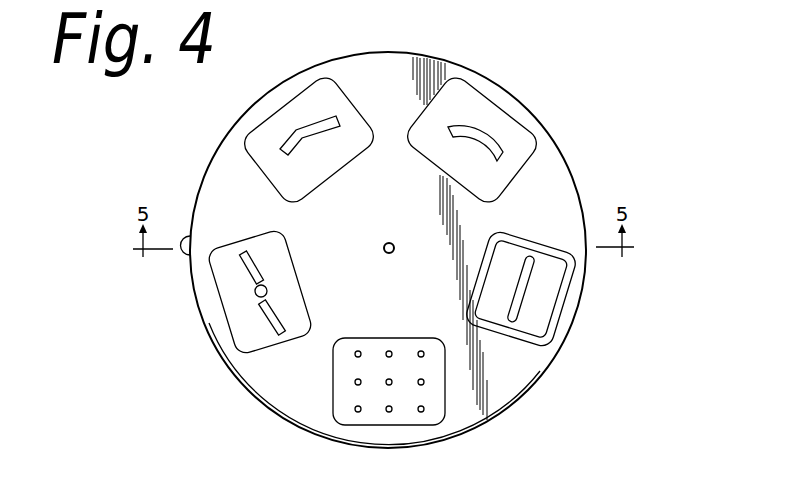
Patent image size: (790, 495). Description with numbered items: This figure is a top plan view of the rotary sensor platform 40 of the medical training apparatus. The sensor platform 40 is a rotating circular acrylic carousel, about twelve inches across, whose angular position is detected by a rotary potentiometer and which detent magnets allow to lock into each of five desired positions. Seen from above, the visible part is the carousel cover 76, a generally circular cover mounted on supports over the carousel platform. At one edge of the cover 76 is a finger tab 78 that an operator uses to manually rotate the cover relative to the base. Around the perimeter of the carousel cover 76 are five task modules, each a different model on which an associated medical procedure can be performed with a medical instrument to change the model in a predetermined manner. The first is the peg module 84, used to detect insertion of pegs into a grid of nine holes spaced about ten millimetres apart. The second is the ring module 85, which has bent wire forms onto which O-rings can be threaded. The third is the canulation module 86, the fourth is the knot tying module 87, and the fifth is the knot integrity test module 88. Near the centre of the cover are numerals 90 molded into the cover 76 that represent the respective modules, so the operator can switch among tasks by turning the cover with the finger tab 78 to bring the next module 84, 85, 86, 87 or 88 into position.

The sensor platform 40 is at (512, 57).
The carousel cover 76 is at (550, 160).
The finger tab 78 is at (190, 252).
The peg module 84 is at (433, 382).
The ring module 85 is at (310, 310).
The canulation module 86 is at (347, 107).
The knot tying module 87 is at (517, 177).
The knot integrity test module 88 is at (537, 233).
The numerals 90 is at (392, 212).